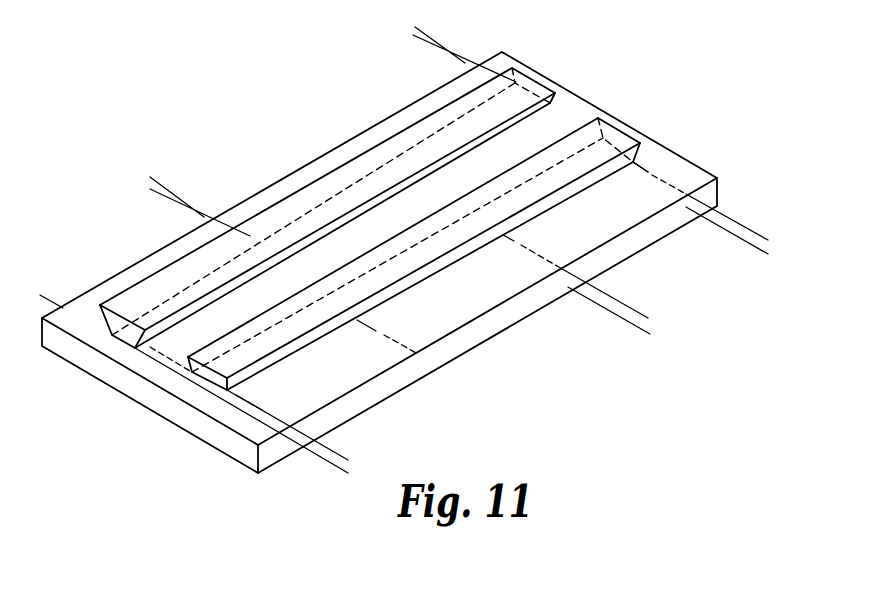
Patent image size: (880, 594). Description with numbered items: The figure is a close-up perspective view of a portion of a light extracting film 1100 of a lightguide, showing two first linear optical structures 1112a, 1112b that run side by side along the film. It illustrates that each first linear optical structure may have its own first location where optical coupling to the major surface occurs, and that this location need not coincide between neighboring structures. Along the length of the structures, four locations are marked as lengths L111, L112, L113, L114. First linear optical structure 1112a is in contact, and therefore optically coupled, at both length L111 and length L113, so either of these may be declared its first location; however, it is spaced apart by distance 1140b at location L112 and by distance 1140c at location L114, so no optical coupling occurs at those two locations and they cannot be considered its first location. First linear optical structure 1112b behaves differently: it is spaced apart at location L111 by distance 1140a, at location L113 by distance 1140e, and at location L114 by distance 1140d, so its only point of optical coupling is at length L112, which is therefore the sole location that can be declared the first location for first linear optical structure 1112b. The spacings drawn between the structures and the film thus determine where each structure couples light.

The light extracting film 1100 is at (189, 94).
The first linear optical structure 1112a is at (132, 306).
The first linear optical structure 1112b is at (226, 368).
The distance 1140a is at (342, 412).
The distance 1140b is at (156, 135).
The distance 1140c is at (418, 0).
The distance 1140d is at (758, 188).
The distance 1140e is at (642, 268).
The length L111 is at (248, 401).
The length L112 is at (373, 327).
The length L113 is at (522, 242).
The length L114 is at (645, 173).